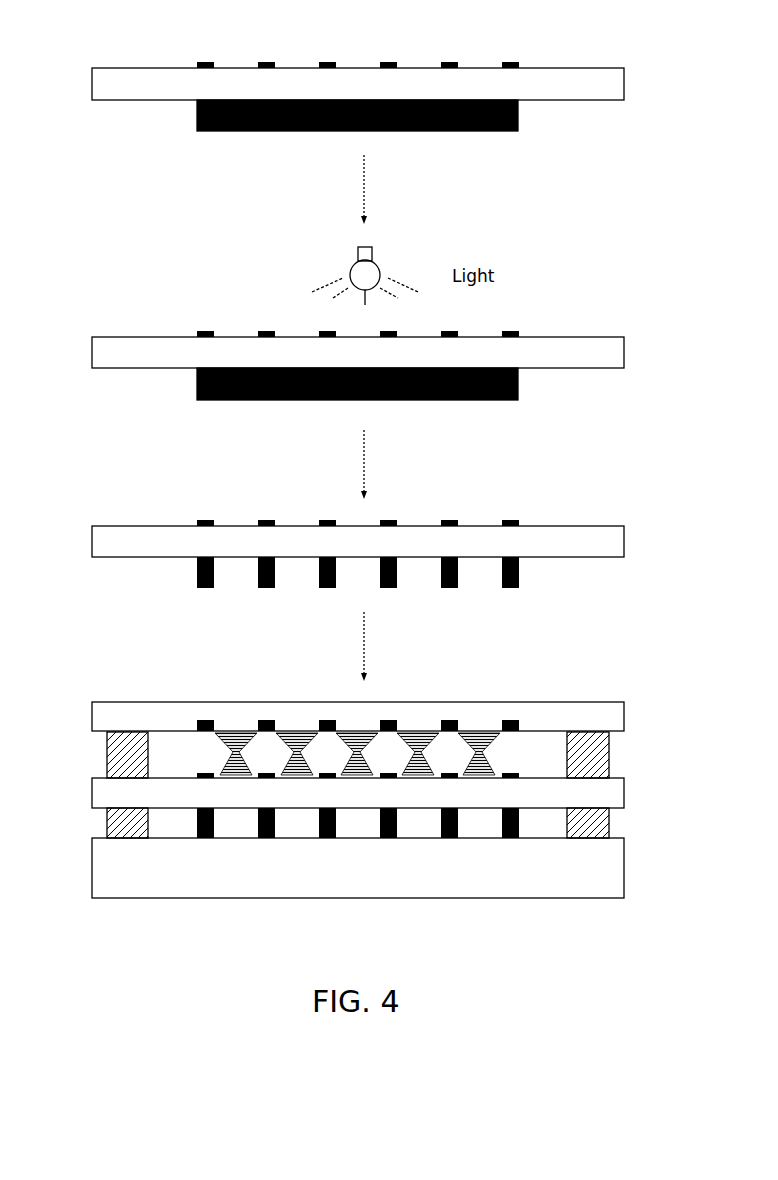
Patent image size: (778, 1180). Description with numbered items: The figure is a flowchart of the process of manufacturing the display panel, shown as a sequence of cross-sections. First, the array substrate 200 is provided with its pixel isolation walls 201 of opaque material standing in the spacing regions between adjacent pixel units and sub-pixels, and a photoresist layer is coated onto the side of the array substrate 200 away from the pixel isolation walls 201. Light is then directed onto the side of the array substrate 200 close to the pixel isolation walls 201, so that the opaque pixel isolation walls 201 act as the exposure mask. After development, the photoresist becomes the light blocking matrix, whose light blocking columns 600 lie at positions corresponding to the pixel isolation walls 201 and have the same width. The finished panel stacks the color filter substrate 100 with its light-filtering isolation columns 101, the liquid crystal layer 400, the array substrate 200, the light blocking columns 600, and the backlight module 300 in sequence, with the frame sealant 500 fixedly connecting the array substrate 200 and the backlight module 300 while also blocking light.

The color filter substrate 100 is at (627, 707).
The light-filtering isolation columns 101 is at (445, 718).
The array substrate 200 is at (627, 87).
The pixel isolation walls 201 is at (508, 63).
The backlight module 300 is at (627, 870).
The liquid crystal layer 400 is at (212, 735).
The frame sealant 500 is at (107, 828).
The light blocking columns 600 is at (520, 567).